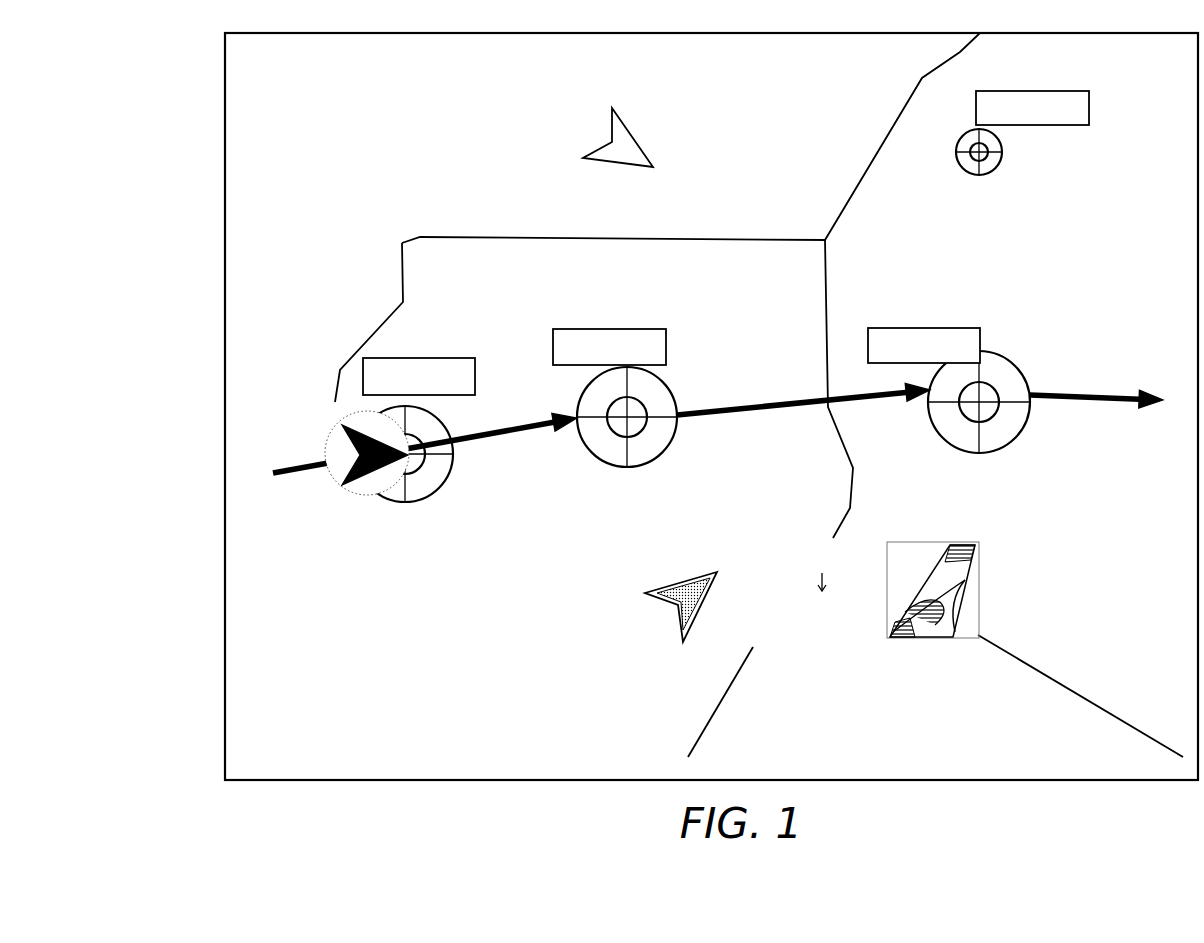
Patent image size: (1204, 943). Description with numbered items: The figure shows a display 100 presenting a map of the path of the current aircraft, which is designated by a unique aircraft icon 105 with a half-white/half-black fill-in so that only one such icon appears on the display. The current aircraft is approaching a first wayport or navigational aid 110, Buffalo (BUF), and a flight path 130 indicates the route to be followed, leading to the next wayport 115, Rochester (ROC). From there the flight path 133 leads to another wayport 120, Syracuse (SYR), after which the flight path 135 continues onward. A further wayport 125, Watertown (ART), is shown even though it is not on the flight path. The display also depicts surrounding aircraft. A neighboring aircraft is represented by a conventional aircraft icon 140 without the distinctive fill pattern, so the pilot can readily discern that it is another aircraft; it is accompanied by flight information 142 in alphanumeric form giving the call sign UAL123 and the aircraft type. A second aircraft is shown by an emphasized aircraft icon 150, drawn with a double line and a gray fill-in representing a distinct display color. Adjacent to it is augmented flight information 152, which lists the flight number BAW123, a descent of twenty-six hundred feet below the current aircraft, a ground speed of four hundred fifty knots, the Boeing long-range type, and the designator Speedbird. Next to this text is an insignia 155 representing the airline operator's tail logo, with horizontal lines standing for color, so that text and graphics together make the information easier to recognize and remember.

The display 100 is at (225, 222).
The aircraft icon 105 is at (360, 500).
The first wayport or navigational aid 110 is at (435, 493).
The wayport 115 is at (653, 457).
The wayport 120 is at (993, 457).
The wayport 125 is at (979, 175).
The flight path 130 is at (487, 437).
The flight path 133 is at (727, 410).
The flight path 135 is at (1073, 392).
The aircraft icon 140 is at (607, 128).
The flight information 142 is at (763, 127).
The aircraft icon 150 is at (673, 607).
The augmented flight information 152 is at (850, 668).
The insignia 155 is at (980, 580).